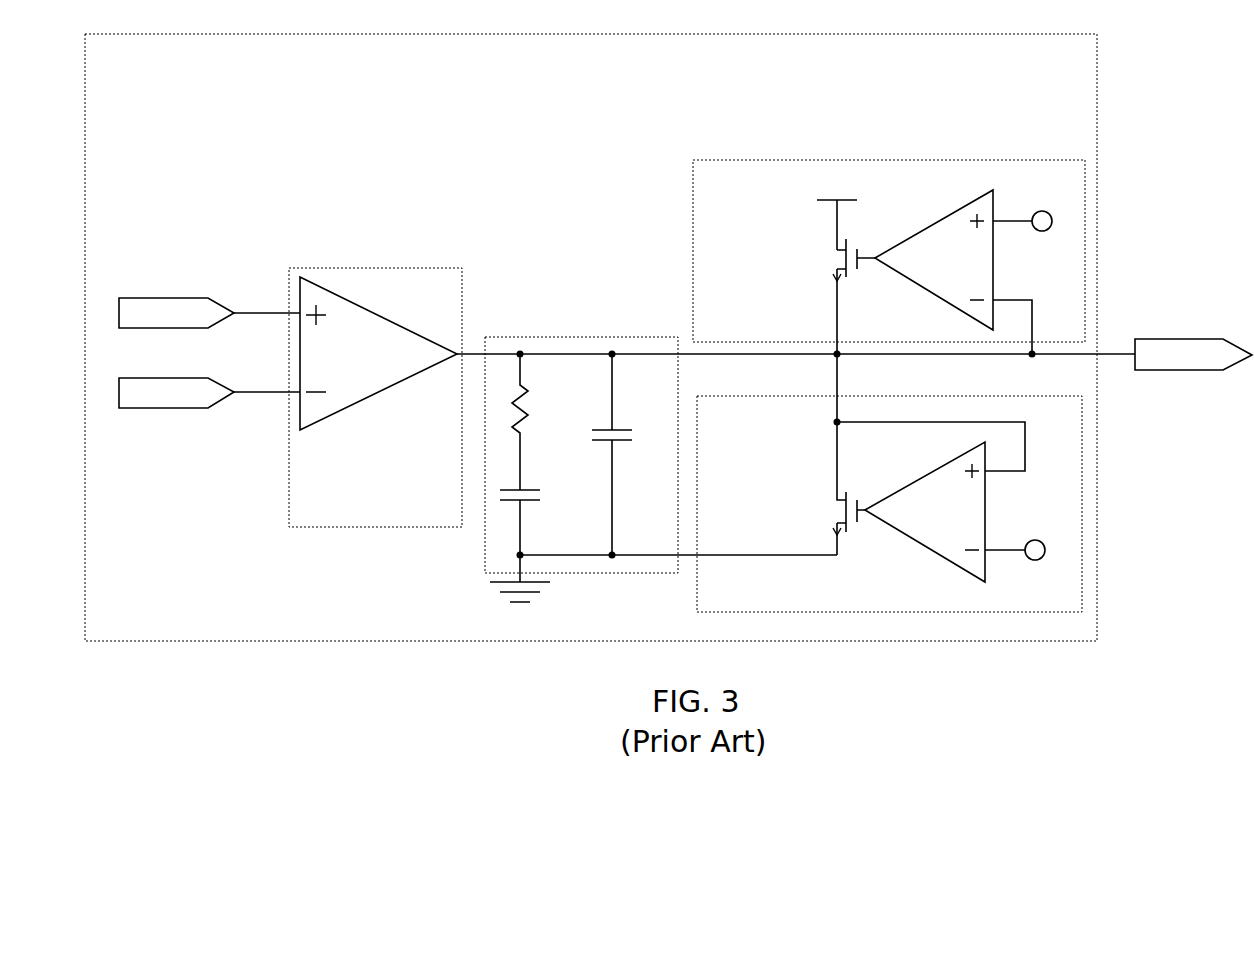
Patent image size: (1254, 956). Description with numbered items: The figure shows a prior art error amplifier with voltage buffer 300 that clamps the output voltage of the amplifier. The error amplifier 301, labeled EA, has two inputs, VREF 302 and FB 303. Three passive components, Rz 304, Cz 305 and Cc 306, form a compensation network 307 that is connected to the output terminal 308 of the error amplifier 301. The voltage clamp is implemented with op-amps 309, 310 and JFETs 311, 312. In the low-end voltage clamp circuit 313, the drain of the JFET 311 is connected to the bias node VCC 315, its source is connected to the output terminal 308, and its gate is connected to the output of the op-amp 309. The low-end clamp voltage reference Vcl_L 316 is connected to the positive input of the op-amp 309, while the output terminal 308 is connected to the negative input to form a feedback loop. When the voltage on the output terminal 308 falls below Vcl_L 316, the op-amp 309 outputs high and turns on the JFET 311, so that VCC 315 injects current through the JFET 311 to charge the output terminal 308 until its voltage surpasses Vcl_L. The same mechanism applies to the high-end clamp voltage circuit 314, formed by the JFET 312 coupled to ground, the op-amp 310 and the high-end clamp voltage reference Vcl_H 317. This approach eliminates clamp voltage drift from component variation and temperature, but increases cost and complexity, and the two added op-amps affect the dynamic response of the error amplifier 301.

The error amplifier with voltage buffer 300 is at (591, 337).
The error amplifier 301 is at (375, 397).
The VREF 302 is at (152, 292).
The FB 303 is at (162, 415).
The Rz 304 is at (540, 422).
The Cz 305 is at (539, 511).
The Cc 306 is at (631, 454).
The compensation network 307 is at (485, 572).
The output terminal 308 is at (1190, 380).
The op-amp 309 is at (955, 274).
The op-amp 310 is at (931, 502).
The JFET 311 is at (832, 260).
The JFET 312 is at (835, 512).
The low-end voltage clamp circuit 313 is at (693, 163).
The high-end clamp voltage circuit 314 is at (697, 610).
The VCC 315 is at (862, 212).
The Vcl_L 316 is at (1031, 229).
The Vcl_H 317 is at (1021, 551).